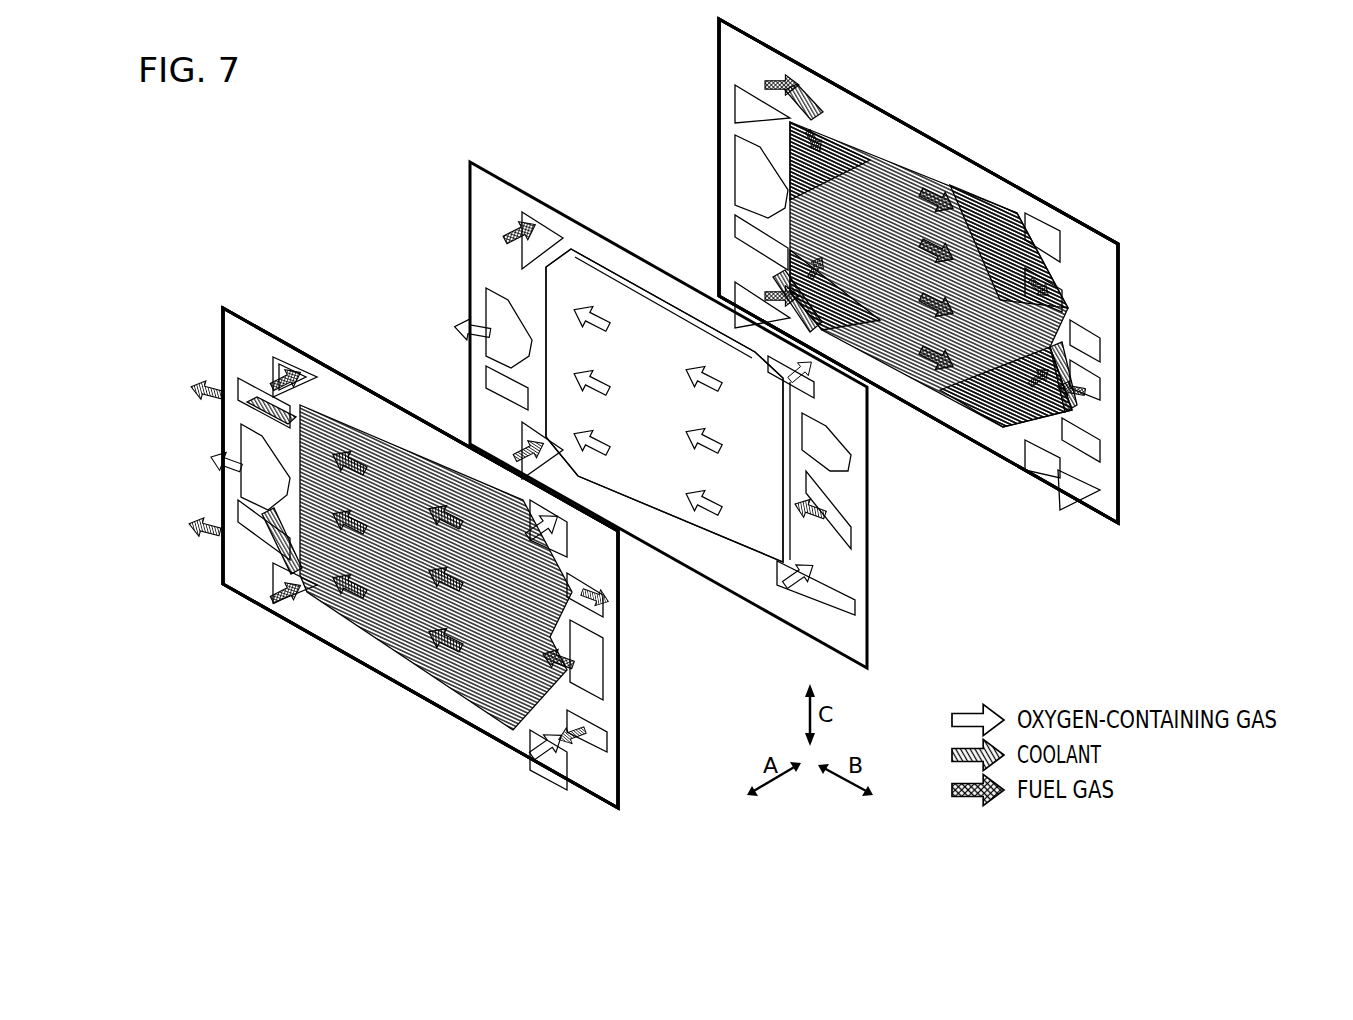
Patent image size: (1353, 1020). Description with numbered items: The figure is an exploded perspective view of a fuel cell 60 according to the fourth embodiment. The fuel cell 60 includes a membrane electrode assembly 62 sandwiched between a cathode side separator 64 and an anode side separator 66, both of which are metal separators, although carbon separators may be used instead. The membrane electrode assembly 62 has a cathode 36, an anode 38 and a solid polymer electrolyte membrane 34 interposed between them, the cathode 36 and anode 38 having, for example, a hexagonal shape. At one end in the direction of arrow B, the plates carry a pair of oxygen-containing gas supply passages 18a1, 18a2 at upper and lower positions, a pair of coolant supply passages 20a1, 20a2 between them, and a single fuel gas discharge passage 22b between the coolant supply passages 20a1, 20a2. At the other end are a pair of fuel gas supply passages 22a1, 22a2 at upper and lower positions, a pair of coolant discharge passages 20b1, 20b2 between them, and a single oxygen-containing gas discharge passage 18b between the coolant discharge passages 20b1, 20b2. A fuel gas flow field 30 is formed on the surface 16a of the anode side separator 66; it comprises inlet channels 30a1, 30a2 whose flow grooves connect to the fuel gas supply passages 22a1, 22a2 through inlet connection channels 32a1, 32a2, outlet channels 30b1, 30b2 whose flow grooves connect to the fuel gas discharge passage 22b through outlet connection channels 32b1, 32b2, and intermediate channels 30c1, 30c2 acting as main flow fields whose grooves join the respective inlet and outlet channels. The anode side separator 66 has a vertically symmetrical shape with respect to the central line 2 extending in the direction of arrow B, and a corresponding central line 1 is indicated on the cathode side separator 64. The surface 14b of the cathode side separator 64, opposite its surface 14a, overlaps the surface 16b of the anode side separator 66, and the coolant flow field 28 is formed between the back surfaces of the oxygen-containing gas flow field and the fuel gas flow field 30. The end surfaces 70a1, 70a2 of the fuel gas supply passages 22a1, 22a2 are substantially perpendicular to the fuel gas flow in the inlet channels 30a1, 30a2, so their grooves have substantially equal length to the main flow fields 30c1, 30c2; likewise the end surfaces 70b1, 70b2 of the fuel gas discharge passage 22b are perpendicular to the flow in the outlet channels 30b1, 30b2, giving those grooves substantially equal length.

The fuel cell 60 is at (347, 152).
The membrane electrode assembly 62 is at (468, 160).
The cathode side separator 64 is at (220, 303).
The anode side separator 66 is at (1098, 226).
The first surface of first separator 14a is at (610, 789).
The surface of the cathode side separator 14b is at (606, 762).
The surface of the anode side separator 16a is at (1097, 472).
The surface of the anode side separator 16b is at (1100, 500).
The first position marker 1 is at (620, 673).
The central line 2 is at (1122, 386).
The coolant flow field 28 is at (396, 448).
The fuel gas flow field 30 is at (886, 150).
The inlet channel 30a1 is at (835, 125).
The inlet channel 30a2 is at (795, 247).
The outlet channel 30b1 is at (1036, 246).
The outlet channel 30b2 is at (1030, 422).
The intermediate channel 30c1 is at (953, 198).
The intermediate channel 30c2 is at (954, 384).
The inlet connection channel 32a1 is at (823, 103).
The inlet connection channel 32a2 is at (798, 298).
The outlet connection channel 32b1 is at (1085, 317).
The outlet connection channel 32b2 is at (1088, 430).
The solid polymer electrolyte membrane 34 is at (478, 290).
The cathode 36 is at (746, 546).
The anode 38 is at (598, 262).
The oxygen-containing gas supply passage 18a1 is at (560, 540).
The oxygen-containing gas supply passage 18a2 is at (560, 755).
The oxygen-containing gas discharge passage 18b is at (250, 447).
The coolant supply passage 20a1 is at (598, 614).
The coolant supply passage 20a2 is at (603, 717).
The coolant discharge passage 20b1 is at (240, 410).
The coolant discharge passage 20b2 is at (258, 540).
The fuel gas supply passage 22a1 is at (300, 372).
The fuel gas supply passage 22a2 is at (283, 578).
The fuel gas discharge passage 22b is at (583, 642).
The end surface at the fuel gas inlet 70a1 is at (798, 88).
The end surface at the fuel gas inlet 70a2 is at (768, 352).
The end surface at the fuel gas outlet 70b1 is at (1082, 345).
The end surface at the fuel gas outlet 70b2 is at (1084, 374).